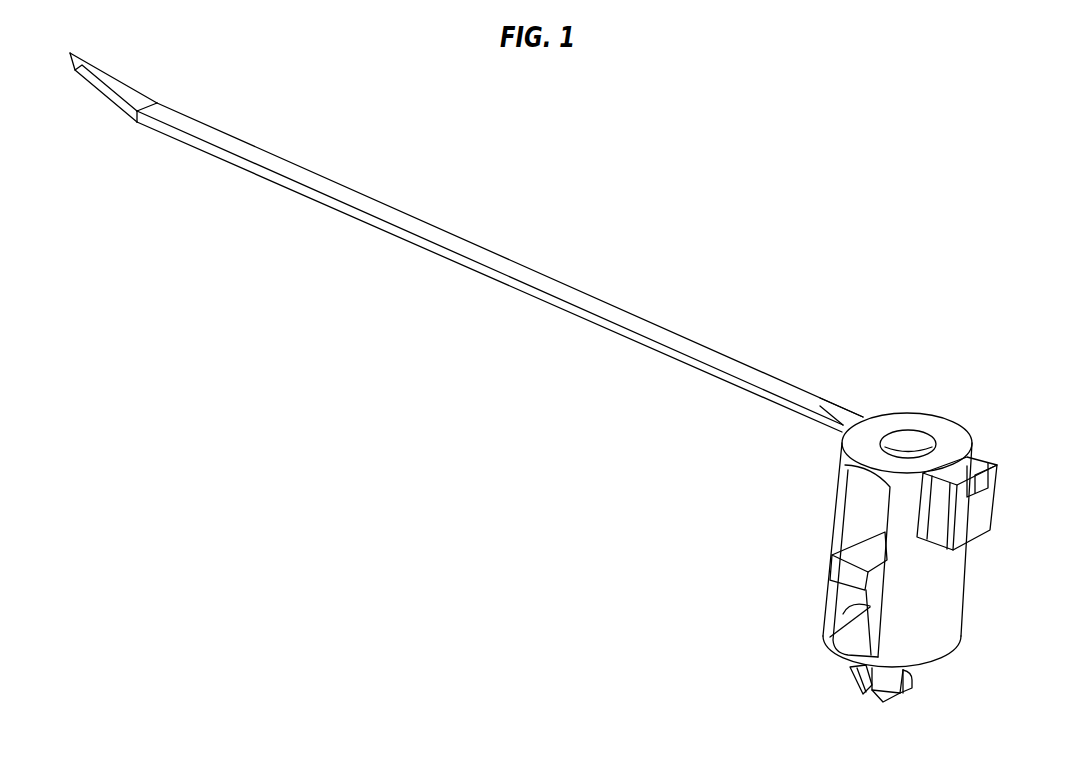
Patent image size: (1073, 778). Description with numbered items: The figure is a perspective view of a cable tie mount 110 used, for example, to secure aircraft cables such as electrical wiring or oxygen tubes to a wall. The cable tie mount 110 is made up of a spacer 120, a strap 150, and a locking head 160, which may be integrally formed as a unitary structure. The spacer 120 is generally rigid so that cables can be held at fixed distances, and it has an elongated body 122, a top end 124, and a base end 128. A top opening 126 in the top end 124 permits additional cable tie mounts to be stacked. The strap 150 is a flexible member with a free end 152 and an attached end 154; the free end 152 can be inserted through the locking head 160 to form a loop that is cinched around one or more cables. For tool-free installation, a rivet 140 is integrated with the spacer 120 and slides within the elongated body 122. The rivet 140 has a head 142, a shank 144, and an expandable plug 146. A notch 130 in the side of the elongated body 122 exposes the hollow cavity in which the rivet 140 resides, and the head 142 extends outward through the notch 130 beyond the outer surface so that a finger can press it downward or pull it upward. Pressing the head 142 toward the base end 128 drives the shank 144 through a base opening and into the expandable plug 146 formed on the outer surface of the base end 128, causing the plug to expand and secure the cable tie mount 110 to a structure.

The cable tie mount 110 is at (408, 577).
The spacer 120 is at (745, 538).
The elongated body 122 is at (938, 581).
The top end 124 is at (912, 420).
The top opening 126 is at (919, 438).
The base end 128 is at (932, 672).
The notch 130 is at (850, 495).
The rivet 140 is at (830, 570).
The head 142 is at (858, 554).
The shank 144 is at (845, 644).
The expandable plug 146 is at (855, 678).
The strap 150 is at (516, 270).
The free end 152 is at (138, 63).
The attached end 154 is at (849, 411).
The locking head 160 is at (985, 515).